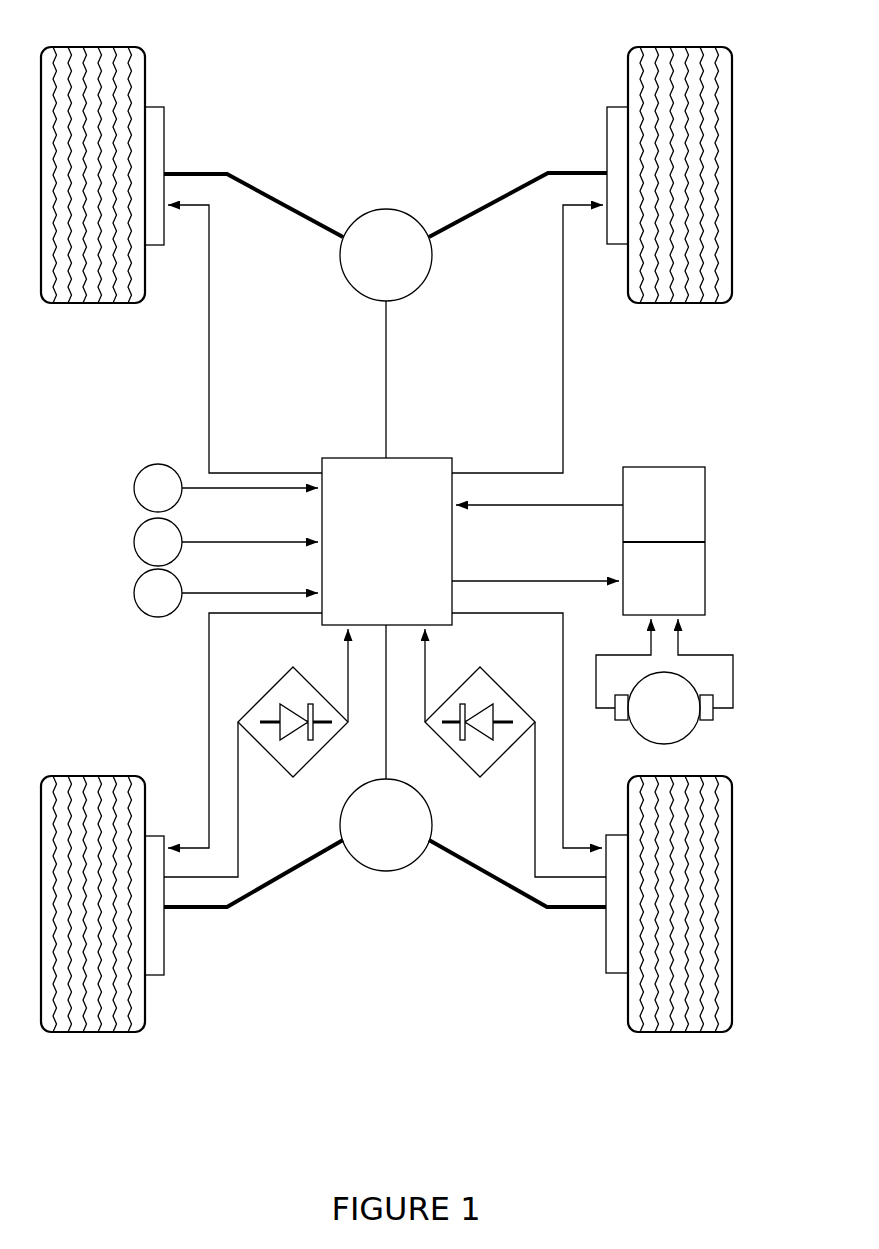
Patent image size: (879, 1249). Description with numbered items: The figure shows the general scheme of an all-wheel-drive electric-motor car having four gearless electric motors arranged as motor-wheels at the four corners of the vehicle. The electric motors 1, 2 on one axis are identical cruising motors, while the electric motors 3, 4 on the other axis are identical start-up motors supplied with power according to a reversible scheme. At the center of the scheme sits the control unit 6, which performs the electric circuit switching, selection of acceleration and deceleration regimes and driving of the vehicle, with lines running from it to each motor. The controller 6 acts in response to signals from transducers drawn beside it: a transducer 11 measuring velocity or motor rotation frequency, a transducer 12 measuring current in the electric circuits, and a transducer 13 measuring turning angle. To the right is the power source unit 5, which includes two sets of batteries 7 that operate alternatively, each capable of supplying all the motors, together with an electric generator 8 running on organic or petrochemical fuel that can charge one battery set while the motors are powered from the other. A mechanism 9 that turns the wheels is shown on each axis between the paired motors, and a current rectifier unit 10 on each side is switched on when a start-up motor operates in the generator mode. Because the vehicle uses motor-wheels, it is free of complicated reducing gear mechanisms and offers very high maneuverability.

The electric motor 1 is at (154, 120).
The electric motor 2 is at (618, 120).
The electric motor 3 is at (154, 960).
The electric motor 4 is at (618, 960).
The power source unit 5 is at (708, 465).
The control unit 6 is at (385, 526).
The sets of batteries 7 is at (697, 574).
The electric generator 8 is at (685, 730).
The mechanism 9 is at (388, 238).
The current rectifier unit 10 is at (292, 765).
The transducer measuring velocity or motor rotation frequency 11 is at (150, 486).
The transducer measuring current 12 is at (152, 543).
The transducer measuring turning angle 13 is at (152, 595).